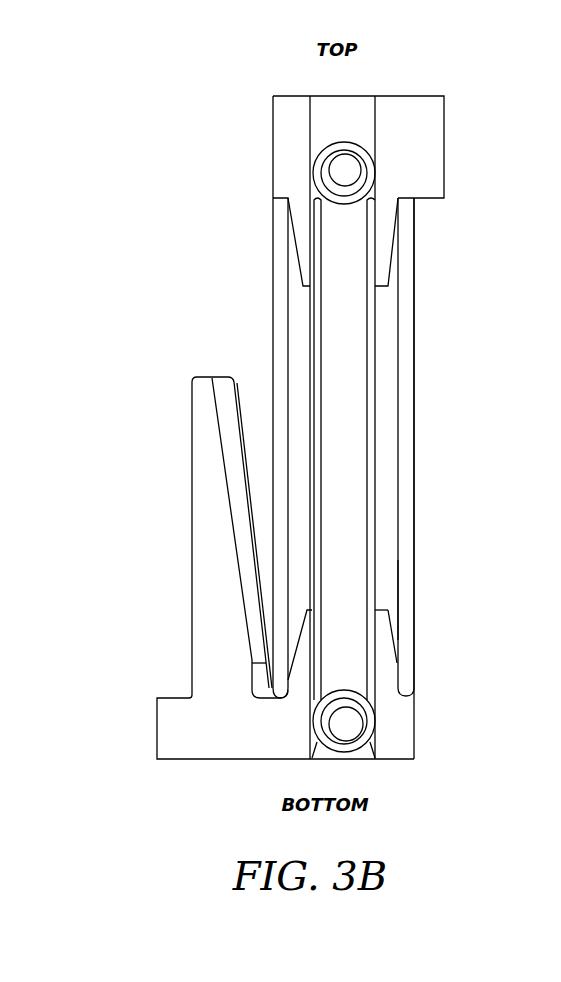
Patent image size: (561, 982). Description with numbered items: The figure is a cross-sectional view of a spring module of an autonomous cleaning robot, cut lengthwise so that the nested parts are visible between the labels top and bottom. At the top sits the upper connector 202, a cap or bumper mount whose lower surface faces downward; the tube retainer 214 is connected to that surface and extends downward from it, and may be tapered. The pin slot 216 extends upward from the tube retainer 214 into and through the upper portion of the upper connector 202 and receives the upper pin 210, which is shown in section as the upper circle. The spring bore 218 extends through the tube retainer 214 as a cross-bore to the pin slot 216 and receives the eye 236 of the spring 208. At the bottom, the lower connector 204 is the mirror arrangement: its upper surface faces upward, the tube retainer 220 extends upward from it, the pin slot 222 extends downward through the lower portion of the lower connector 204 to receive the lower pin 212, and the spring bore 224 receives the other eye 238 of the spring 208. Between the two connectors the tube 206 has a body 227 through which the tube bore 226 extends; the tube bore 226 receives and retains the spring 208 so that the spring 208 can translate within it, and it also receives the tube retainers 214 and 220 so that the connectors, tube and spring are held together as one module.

The upper connector 202 is at (413, 153).
The lower connector 204 is at (187, 732).
The tube 206 is at (405, 452).
The spring 208 is at (370, 407).
The upper pin 210 is at (348, 163).
The lower pin 212 is at (350, 728).
The tube retainer 214 is at (385, 225).
The pin slot 216 is at (313, 127).
The spring bore 218 is at (377, 272).
The tube retainer 220 is at (388, 663).
The pin slot 222 is at (375, 752).
The spring bore 224 is at (398, 620).
The tube bore 226 is at (400, 580).
The body 227 is at (408, 502).
The eye 236 is at (315, 168).
The eye 238 is at (365, 742).